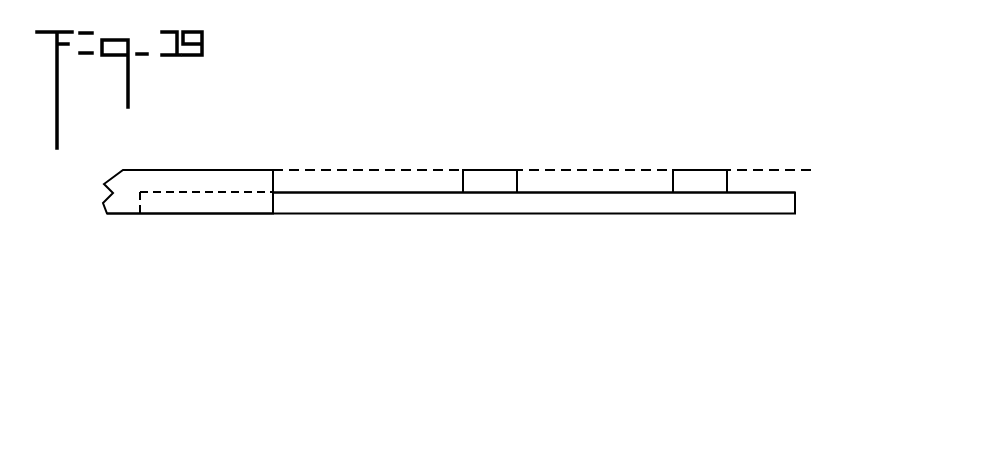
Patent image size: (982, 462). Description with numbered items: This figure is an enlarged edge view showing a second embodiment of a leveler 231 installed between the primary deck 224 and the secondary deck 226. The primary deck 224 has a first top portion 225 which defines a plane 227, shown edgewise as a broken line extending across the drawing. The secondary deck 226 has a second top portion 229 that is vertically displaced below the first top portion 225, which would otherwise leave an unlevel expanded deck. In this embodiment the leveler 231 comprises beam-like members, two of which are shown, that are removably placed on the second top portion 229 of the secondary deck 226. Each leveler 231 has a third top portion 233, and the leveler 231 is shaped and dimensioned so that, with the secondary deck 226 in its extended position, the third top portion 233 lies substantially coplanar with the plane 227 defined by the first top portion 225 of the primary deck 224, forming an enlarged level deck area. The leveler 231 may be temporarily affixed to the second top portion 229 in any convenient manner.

The primary deck 224 is at (155, 182).
The first top portion 225 is at (233, 169).
The secondary deck 226 is at (570, 202).
The plane 227 is at (345, 169).
The second top portion 229 is at (568, 192).
The leveler 231 is at (478, 180).
The third top portion 233 is at (690, 169).